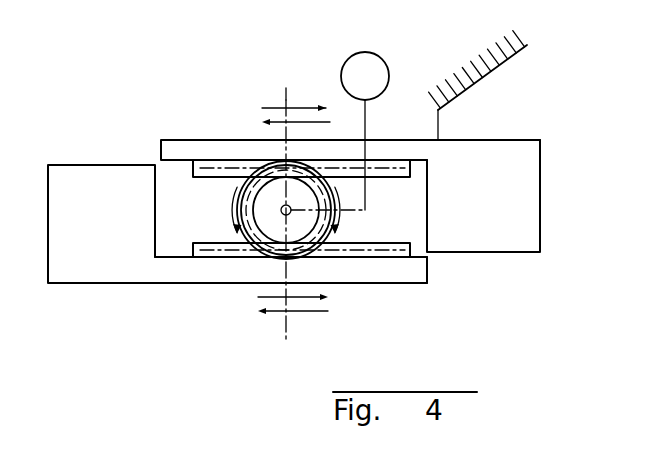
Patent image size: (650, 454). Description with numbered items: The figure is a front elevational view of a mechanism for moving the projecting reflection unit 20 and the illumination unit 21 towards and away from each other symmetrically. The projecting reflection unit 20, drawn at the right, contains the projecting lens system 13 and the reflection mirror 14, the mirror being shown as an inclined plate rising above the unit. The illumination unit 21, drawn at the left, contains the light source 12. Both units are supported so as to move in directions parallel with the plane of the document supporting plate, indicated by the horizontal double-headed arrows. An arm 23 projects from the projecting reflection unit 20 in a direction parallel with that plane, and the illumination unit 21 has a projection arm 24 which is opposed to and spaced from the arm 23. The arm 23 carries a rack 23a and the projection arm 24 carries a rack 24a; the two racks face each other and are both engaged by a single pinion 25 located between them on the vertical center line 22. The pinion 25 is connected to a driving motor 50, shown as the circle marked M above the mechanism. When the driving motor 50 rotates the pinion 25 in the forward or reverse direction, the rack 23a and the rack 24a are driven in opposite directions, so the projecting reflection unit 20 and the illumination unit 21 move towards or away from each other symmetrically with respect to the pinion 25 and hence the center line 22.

The illumination unit 21 is at (237, 181).
The light source 12 is at (95, 164).
The projecting reflection unit 20 is at (526, 177).
The projecting lens system 13 is at (537, 145).
The reflection mirror 14 is at (510, 62).
The center line 22 is at (295, 86).
The arm 23 is at (218, 148).
The rack 23a is at (393, 178).
The projection arm 24 is at (390, 276).
The rack 24a is at (208, 247).
The pinion 25 is at (267, 225).
The driving motor 50 is at (389, 63).